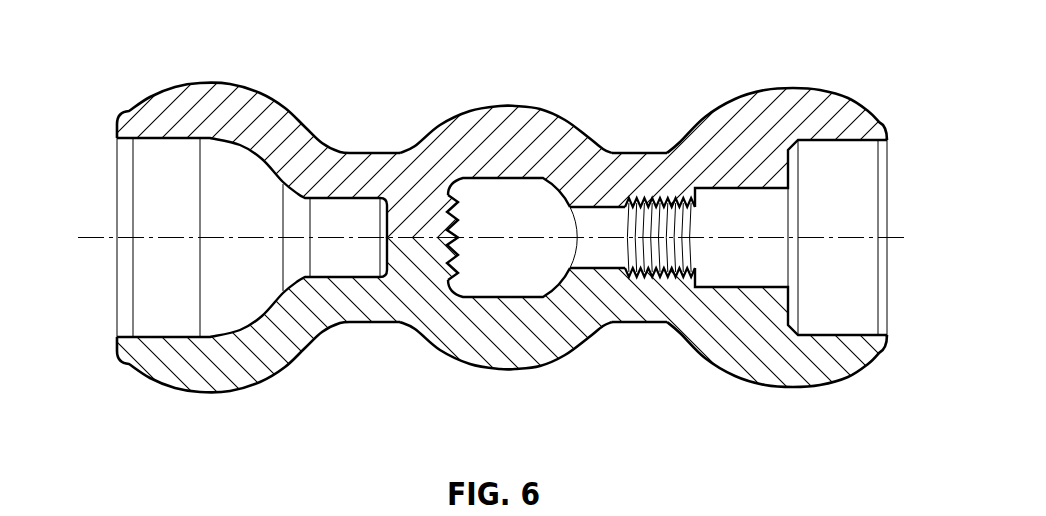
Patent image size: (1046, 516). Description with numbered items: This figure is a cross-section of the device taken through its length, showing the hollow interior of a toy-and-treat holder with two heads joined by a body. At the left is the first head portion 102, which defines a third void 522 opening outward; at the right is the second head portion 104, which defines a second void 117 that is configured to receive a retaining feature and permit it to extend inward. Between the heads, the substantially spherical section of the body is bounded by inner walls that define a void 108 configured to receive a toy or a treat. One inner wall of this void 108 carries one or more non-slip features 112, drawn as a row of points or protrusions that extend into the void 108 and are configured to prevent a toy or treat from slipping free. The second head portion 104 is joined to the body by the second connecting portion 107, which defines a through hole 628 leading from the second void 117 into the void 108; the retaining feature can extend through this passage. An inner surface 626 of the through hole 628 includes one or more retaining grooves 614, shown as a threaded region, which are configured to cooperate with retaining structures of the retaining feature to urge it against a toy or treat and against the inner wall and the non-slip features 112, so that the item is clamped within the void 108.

The first head portion 102 is at (252, 90).
The second head portion 104 is at (815, 88).
The second connecting portion 107 is at (646, 322).
The void 108 is at (486, 192).
The non-slip features 112 is at (465, 283).
The second void 117 is at (838, 194).
The third void 522 is at (163, 193).
The retaining grooves 614 is at (647, 283).
The inner surface 626 is at (581, 203).
The through hole 628 is at (583, 262).